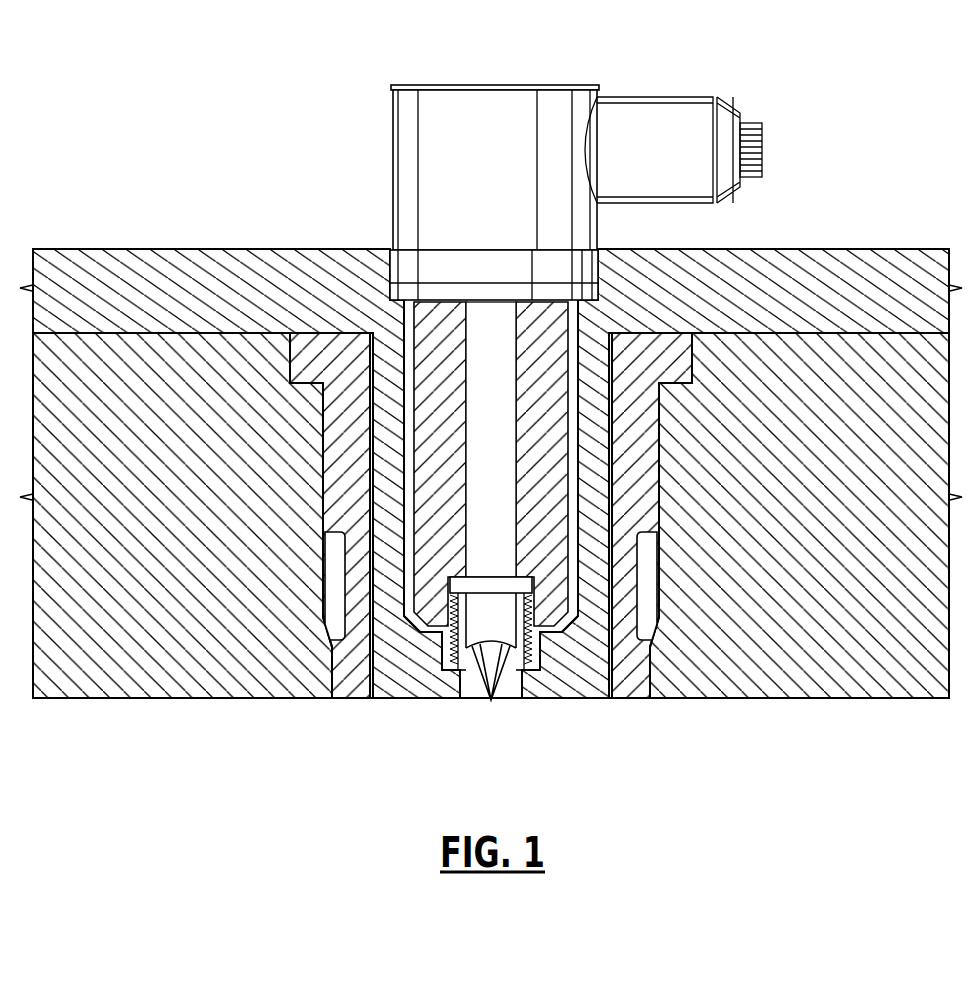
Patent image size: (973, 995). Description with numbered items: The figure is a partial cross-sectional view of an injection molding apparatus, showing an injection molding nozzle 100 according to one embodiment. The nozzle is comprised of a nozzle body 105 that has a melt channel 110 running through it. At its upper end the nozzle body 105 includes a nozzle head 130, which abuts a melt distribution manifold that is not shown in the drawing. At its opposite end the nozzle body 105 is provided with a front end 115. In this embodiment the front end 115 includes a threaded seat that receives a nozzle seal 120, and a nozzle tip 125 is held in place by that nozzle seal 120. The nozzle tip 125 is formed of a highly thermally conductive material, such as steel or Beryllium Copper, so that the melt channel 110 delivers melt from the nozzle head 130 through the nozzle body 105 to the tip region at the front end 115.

The injection molding nozzle 100 is at (347, 120).
The nozzle body 105 is at (432, 487).
The melt channel 110 is at (478, 450).
The front end 115 is at (425, 627).
The nozzle seal 120 is at (547, 645).
The nozzle tip 125 is at (480, 617).
The nozzle head 130 is at (432, 173).